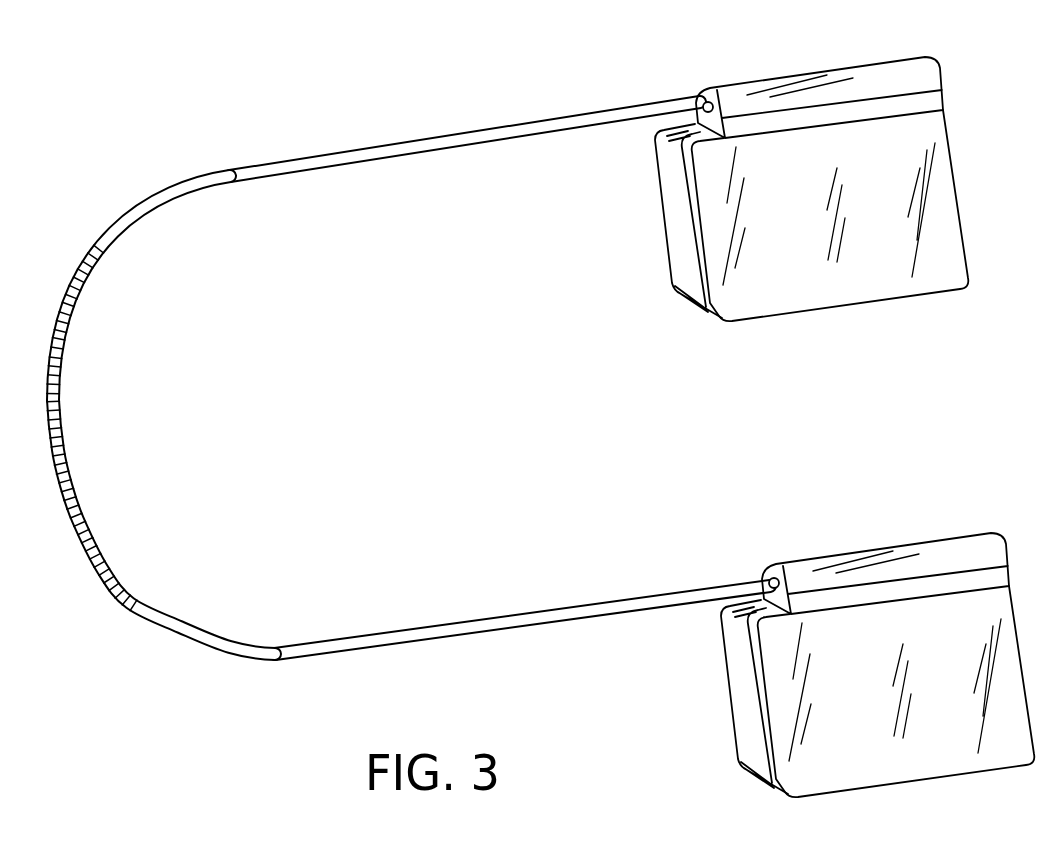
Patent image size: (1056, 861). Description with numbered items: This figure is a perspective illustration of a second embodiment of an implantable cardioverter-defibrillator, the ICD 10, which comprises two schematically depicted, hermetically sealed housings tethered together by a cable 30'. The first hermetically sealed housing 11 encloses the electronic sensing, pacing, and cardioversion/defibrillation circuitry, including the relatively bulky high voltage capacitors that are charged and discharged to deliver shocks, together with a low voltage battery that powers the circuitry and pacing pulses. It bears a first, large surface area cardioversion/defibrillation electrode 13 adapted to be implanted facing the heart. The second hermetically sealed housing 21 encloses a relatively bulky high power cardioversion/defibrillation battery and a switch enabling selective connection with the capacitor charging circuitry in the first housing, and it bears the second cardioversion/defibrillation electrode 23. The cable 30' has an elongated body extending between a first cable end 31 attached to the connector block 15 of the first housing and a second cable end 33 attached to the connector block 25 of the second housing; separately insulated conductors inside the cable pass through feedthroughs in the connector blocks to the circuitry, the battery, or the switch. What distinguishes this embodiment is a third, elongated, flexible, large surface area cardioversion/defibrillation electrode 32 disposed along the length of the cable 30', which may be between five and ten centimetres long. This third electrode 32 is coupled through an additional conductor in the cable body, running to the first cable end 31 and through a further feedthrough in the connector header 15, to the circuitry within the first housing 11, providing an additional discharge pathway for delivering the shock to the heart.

The ICD 10 is at (417, 318).
The first hermetically sealed housing 11 is at (806, 192).
The first cardioversion/defibrillation electrode 13 is at (791, 300).
The connector block 15 is at (802, 95).
The second hermetically sealed housing 21 is at (877, 717).
The second cardioversion/defibrillation electrode 23 is at (868, 678).
The connector block 25 is at (885, 560).
The cable 30' is at (411, 378).
The first cable end 31 is at (697, 97).
The third cardioversion/defibrillation electrode 32 is at (76, 487).
The second cable end 33 is at (778, 545).